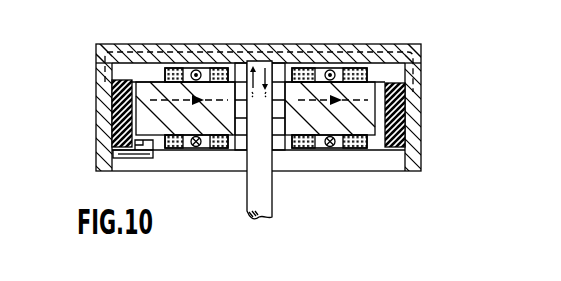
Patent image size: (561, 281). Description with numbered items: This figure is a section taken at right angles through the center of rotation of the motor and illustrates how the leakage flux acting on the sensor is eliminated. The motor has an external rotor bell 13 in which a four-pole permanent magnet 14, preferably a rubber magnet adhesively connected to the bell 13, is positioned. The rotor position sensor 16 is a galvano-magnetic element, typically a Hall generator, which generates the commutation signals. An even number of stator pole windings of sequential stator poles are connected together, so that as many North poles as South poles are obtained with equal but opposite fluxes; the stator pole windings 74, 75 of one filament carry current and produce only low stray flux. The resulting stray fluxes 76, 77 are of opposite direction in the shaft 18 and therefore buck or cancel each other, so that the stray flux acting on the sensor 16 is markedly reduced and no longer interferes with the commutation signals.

The external rotor bell 13 is at (259, 53).
The permanent magnet 14 is at (421, 119).
The rotor position sensor 16 is at (140, 159).
The shaft 18 is at (268, 196).
The stator pole winding 74 is at (178, 152).
The stator pole winding 75 is at (356, 152).
The stray flux 76 is at (183, 58).
The stray flux 77 is at (340, 56).